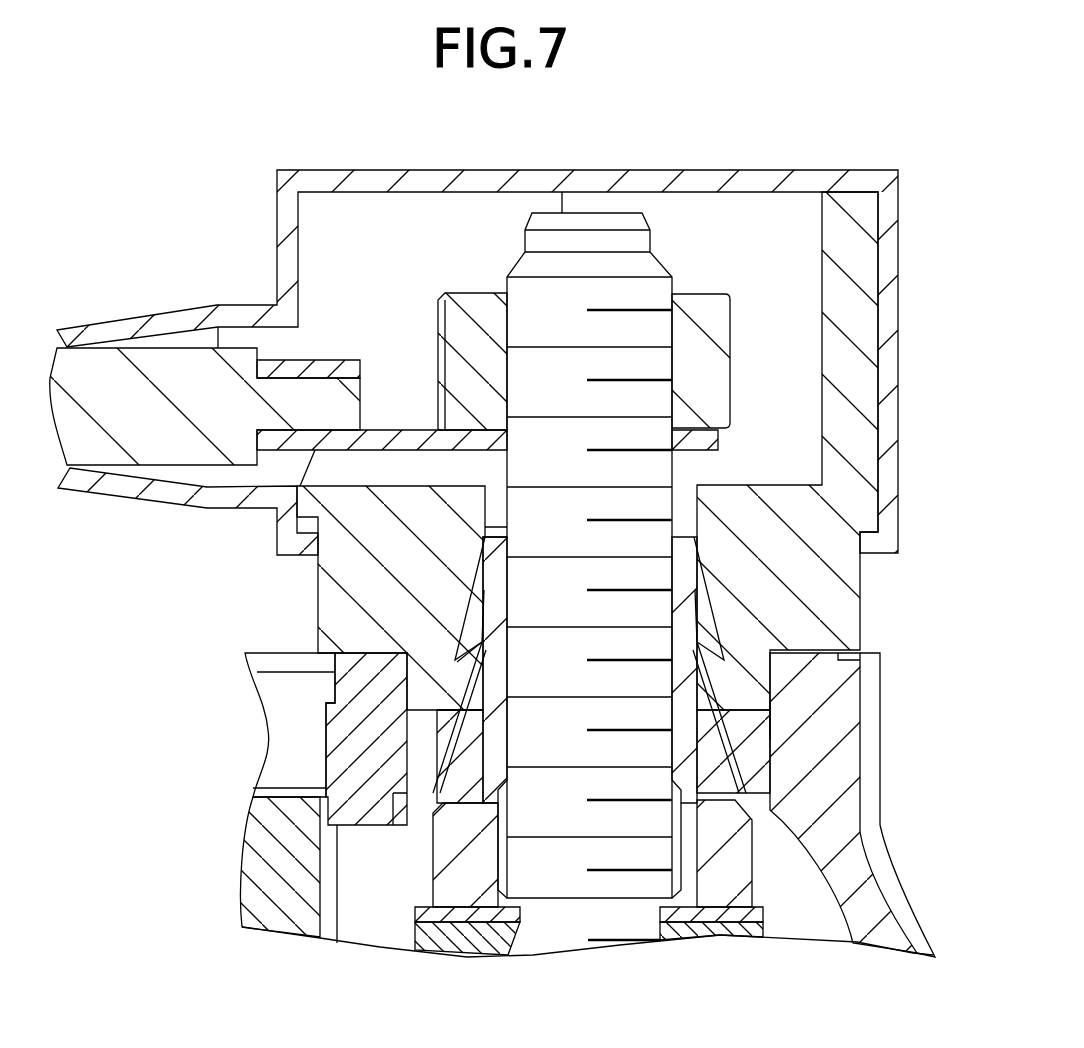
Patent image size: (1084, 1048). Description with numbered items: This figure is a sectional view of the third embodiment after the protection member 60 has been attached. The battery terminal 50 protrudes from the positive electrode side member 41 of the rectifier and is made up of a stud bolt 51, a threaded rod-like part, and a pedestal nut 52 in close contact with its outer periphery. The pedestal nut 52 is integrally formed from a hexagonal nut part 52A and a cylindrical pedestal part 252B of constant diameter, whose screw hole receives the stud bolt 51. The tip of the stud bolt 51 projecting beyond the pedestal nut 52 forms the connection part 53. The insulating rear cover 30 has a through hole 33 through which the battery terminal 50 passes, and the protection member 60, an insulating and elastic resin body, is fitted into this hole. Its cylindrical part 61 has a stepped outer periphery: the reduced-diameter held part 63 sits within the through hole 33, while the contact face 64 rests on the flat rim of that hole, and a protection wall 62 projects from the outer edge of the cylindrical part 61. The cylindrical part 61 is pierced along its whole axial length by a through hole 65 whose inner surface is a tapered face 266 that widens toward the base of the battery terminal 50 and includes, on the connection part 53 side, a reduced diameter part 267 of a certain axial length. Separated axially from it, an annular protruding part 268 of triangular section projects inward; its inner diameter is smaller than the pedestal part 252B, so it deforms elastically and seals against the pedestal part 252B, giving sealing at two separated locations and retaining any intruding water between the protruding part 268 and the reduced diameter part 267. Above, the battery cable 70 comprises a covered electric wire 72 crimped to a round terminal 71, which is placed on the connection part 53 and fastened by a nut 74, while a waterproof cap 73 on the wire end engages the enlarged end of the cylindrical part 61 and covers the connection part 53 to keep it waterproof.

The rear cover 30 is at (880, 798).
The through hole 33 is at (772, 718).
The positive electrode side member 41 is at (415, 925).
The battery terminal 50 is at (413, 722).
The stud bolt 51 is at (503, 752).
The pedestal nut 52 is at (436, 808).
The hexagonal nut part 52A is at (433, 840).
The pedestal part 252B is at (455, 786).
The connection part 53 is at (672, 472).
The protection member 60 is at (300, 588).
The cylindrical part 61 is at (318, 600).
The protection wall 62 is at (898, 306).
The held part 63 is at (335, 690).
The contact face 64 is at (840, 663).
The through hole 65 is at (448, 728).
The battery cable 70 is at (777, 160).
The round terminal 71 is at (398, 425).
The covered electric wire 72 is at (167, 346).
The waterproof cap 73 is at (413, 171).
The nut 74 is at (707, 293).
The tapered face 266 is at (710, 600).
The reduced diameter part 267 is at (697, 521).
The protruding part 268 is at (457, 662).